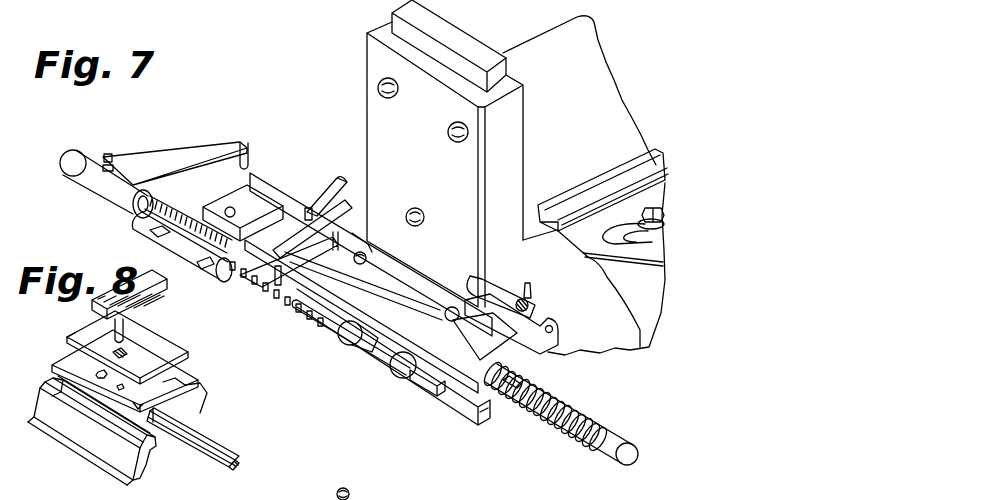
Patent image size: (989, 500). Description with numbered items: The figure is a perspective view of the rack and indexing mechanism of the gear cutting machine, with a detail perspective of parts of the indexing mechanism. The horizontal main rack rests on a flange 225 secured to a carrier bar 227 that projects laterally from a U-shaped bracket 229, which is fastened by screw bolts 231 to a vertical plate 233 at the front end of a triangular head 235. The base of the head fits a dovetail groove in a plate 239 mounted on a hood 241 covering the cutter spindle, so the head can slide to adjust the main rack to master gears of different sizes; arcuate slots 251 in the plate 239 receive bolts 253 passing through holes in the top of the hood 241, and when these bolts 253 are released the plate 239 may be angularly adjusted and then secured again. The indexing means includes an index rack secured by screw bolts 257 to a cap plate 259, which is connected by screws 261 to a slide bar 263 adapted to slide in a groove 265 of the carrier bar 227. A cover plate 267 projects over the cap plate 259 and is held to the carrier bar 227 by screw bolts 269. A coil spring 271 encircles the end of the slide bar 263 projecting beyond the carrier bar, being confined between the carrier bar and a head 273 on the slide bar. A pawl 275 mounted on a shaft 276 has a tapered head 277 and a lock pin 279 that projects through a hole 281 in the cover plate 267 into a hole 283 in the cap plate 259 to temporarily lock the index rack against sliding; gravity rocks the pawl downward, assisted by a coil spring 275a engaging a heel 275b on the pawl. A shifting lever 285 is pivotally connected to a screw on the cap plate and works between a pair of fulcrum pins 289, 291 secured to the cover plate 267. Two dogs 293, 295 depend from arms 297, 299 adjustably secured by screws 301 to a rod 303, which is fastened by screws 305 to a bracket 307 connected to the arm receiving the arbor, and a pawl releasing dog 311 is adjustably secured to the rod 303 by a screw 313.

In FIG. 7, the flange 225 is at (462, 408).
In FIG. 8, the flange 225 is at (93, 462).
In FIG. 7, the carrier bar 227 is at (507, 411).
In FIG. 8, the carrier bar 227 is at (152, 466).
In FIG. 7, the U-shaped bracket 229 is at (512, 166).
In FIG. 7, the screw bolts 231 is at (448, 130).
In FIG. 7, the vertical plate 233 is at (446, 26).
In FIG. 7, the triangular head 235 is at (563, 29).
In FIG. 7, the plate 239 is at (652, 196).
In FIG. 7, the hood 241 is at (620, 336).
In FIG. 7, the arcuate slots 251 is at (662, 251).
In FIG. 7, the bolts 253 is at (666, 216).
In FIG. 7, the screw bolts 257 is at (234, 209).
In FIG. 7, the cap plate 259 is at (258, 218).
In FIG. 8, the cap plate 259 is at (148, 389).
In FIG. 8, the screws 261 is at (98, 373).
In FIG. 8, the slide bar 263 is at (201, 439).
In FIG. 8, the groove 265 is at (163, 412).
In FIG. 7, the cover plate 267 is at (406, 274).
In FIG. 8, the cover plate 267 is at (168, 353).
In FIG. 7, the screw bolts 269 is at (360, 270).
In FIG. 7, the coil spring 271 is at (578, 413).
In FIG. 7, the head 273 is at (631, 455).
In FIG. 7, the pawl 275 is at (527, 349).
In FIG. 7, the coil spring 275a is at (532, 310).
In FIG. 7, the heel 275b is at (526, 298).
In FIG. 7, the shaft 276 is at (542, 314).
In FIG. 7, the tapered head 277 is at (520, 396).
In FIG. 8, the tapered head 277 is at (94, 306).
In FIG. 7, the lock pin 279 is at (515, 375).
In FIG. 8, the lock pin 279 is at (78, 329).
In FIG. 8, the hole 281 is at (148, 339).
In FIG. 8, the hole 283 is at (135, 395).
In FIG. 7, the shifting lever 285 is at (343, 200).
In FIG. 7, the fulcrum pin 289 is at (308, 207).
In FIG. 7, the fulcrum pin 291 is at (340, 218).
In FIG. 7, the dog 293 is at (251, 163).
In FIG. 7, the dog 295 is at (368, 252).
In FIG. 7, the arm 297 is at (161, 153).
In FIG. 7, the arm 299 is at (313, 288).
In FIG. 7, the screws 301 is at (78, 179).
In FIG. 7, the rod 303 is at (143, 209).
In FIG. 7, the screws 305 is at (200, 262).
In FIG. 7, the bracket 307 is at (156, 231).
In FIG. 7, the pawl releasing dog 311 is at (390, 351).
In FIG. 7, the screw 313 is at (347, 338).